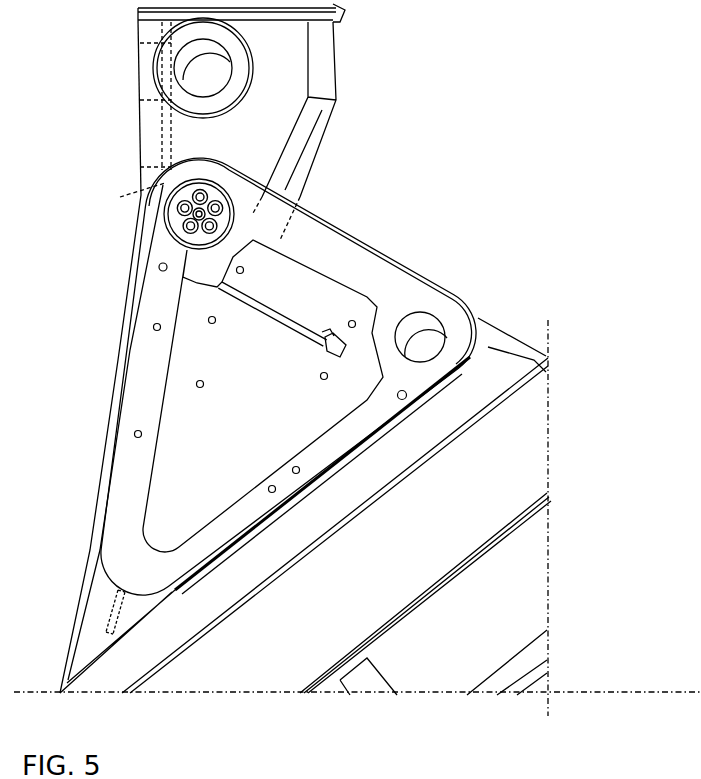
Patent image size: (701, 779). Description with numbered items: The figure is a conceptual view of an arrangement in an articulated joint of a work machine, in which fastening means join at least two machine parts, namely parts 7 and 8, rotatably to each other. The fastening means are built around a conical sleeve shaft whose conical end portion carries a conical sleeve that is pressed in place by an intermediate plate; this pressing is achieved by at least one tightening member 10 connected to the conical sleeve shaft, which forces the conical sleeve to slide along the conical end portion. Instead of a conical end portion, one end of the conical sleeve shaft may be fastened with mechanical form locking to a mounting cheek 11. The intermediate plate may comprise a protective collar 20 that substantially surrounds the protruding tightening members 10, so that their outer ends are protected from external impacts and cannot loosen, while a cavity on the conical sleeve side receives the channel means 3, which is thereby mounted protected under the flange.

The channel means 3 is at (230, 298).
The machine part 7 is at (327, 50).
The machine part 8 is at (520, 460).
The tightening member 10 is at (160, 200).
The mounting cheek 11 is at (500, 317).
The protective collar 20 is at (165, 237).